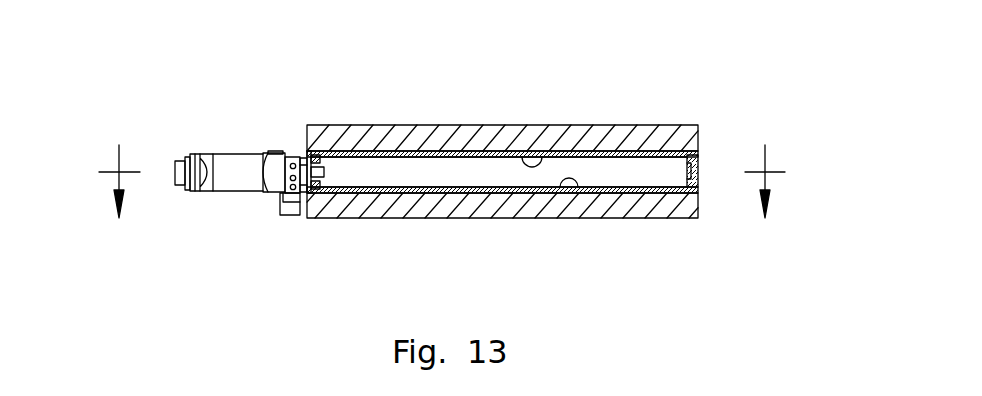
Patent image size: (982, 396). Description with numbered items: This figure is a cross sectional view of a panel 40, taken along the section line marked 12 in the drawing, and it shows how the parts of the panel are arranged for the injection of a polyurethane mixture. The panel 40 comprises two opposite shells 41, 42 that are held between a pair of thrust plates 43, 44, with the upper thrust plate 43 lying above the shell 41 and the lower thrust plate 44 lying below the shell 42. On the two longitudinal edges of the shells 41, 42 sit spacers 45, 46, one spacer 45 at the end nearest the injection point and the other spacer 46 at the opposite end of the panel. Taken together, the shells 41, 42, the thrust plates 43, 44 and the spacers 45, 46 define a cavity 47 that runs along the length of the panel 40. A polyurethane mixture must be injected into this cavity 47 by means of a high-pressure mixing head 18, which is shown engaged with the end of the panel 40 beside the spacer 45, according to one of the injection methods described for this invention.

The section line 12- 12 is at (441, 170).
The high-pressure mixing head 18 is at (239, 176).
The panel 40 is at (616, 110).
The shell 41 is at (522, 152).
The shell 42 is at (572, 190).
The thrust plate 43 is at (457, 125).
The thrust plate 44 is at (438, 206).
The spacer 45 is at (308, 194).
The spacer 46 is at (698, 168).
The cavity 47 is at (375, 170).